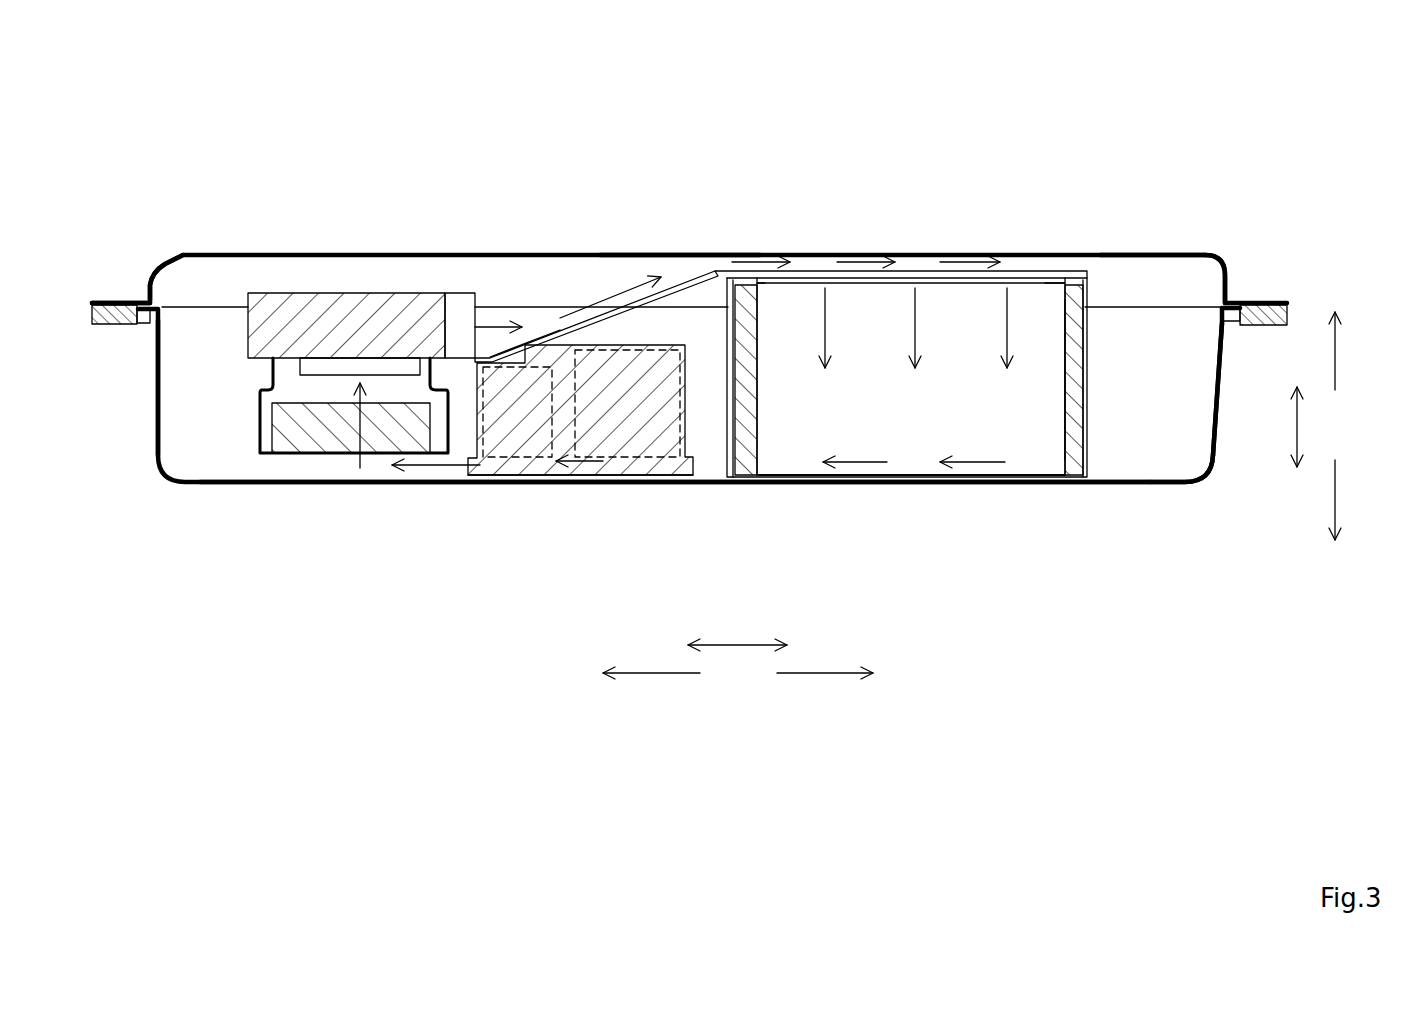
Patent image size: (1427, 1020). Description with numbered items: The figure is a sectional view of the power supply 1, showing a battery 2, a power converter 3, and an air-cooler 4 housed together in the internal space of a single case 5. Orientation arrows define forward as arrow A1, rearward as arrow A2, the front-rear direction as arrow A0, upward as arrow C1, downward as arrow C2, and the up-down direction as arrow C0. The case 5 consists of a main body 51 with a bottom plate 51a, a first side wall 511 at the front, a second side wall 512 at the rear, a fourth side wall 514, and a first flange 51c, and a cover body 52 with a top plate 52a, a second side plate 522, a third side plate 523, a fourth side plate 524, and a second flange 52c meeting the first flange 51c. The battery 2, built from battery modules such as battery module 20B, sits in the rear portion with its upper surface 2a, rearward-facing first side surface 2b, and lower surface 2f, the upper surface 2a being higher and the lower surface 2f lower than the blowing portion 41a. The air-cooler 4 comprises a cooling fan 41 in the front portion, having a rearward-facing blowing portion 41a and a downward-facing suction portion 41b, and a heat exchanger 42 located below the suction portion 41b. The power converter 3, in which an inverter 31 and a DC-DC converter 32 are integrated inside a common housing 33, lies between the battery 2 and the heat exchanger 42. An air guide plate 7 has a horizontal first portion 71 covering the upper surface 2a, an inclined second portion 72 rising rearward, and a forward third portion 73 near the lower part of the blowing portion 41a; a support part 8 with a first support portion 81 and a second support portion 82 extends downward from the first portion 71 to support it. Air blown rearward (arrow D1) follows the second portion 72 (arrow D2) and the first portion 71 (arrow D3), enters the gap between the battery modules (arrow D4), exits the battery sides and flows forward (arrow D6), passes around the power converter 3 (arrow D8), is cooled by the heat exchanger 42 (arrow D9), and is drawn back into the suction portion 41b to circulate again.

The power supply 1 is at (477, 126).
The battery 2 is at (1051, 445).
The upper surface 2a is at (1030, 280).
The first side surface 2b is at (1093, 403).
The lower surface 2f is at (900, 485).
The battery module 20B is at (967, 485).
The power converter 3 is at (664, 480).
The inverter 31 is at (685, 425).
The DC-DC converter 32 is at (520, 458).
The housing 33 is at (588, 482).
The air-cooler 4 is at (367, 266).
The cooling fan 41 is at (318, 289).
The blowing portion 41a is at (487, 352).
The suction portion 41b is at (318, 440).
The heat exchanger 42 is at (332, 455).
The case 5 is at (176, 494).
The main body 51 is at (455, 484).
The bottom plate 51a is at (1125, 485).
The first flange 51c is at (118, 326).
The first side wall 511 is at (157, 366).
The second side wall 512 is at (1223, 380).
The fourth side wall 514 is at (1180, 483).
The cover body 52 is at (221, 252).
The top plate 52a is at (665, 252).
The second flange 52c is at (120, 301).
The second side plate 522 is at (1228, 280).
The third side plate 523 is at (150, 290).
The fourth side plate 524 is at (1182, 270).
The air guide plate 7 is at (705, 266).
The first portion 71 is at (813, 272).
The second portion 72 is at (553, 330).
The third portion 73 is at (496, 345).
The support part 8 is at (936, 294).
The first support portion 81 is at (1080, 284).
The second support portion 82 is at (733, 298).
The arrow D1 is at (502, 322).
The arrow D2 is at (622, 292).
The arrow D3 is at (755, 262).
The arrow D4 is at (829, 327).
The arrow D6 is at (854, 468).
The arrow D8 is at (440, 470).
The arrow D9 is at (347, 470).
The arrow A0 is at (745, 652).
The arrow A1 is at (660, 677).
The arrow A2 is at (818, 677).
The arrow C0 is at (1303, 427).
The arrow C1 is at (1338, 352).
The arrow C2 is at (1338, 535).